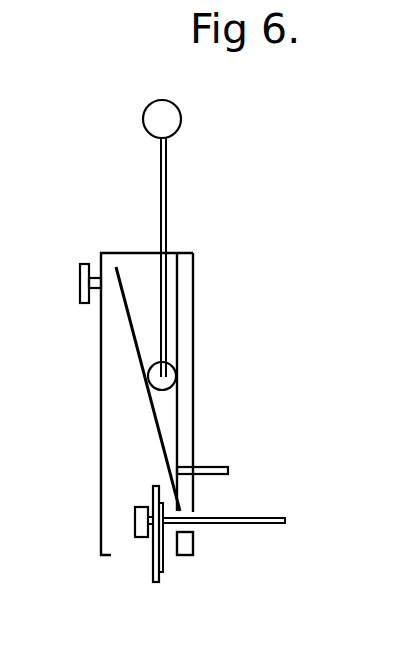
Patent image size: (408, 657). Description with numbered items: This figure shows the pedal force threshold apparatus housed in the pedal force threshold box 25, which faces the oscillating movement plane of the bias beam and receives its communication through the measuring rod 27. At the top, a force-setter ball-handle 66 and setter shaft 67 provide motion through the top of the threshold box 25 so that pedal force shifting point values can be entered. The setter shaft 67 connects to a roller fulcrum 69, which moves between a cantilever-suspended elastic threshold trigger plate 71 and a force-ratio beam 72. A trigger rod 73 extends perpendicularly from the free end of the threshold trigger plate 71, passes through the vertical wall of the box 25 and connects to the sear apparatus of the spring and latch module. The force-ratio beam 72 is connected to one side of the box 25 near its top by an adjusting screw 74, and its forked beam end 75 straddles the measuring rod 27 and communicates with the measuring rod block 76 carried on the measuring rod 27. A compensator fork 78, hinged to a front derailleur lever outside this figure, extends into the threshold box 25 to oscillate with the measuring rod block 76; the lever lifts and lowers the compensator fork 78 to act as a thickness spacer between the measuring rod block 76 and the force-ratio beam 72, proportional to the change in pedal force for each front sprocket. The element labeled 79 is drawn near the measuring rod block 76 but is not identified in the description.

The force-setter ball-handle 66 is at (142, 126).
The setter shaft 67 is at (168, 176).
The pedal force threshold box 25 is at (130, 251).
The adjusting screw 74 is at (82, 262).
The roller fulcrum 69 is at (173, 358).
The threshold trigger plate 71 is at (180, 433).
The force-ratio beam 72 is at (157, 438).
The trigger rod 73 is at (225, 464).
The forked beam end 75 is at (183, 529).
The measuring rod 27 is at (225, 527).
The measuring rod block 76 is at (134, 530).
The plate 79 is at (142, 544).
The compensator fork 78 is at (165, 561).